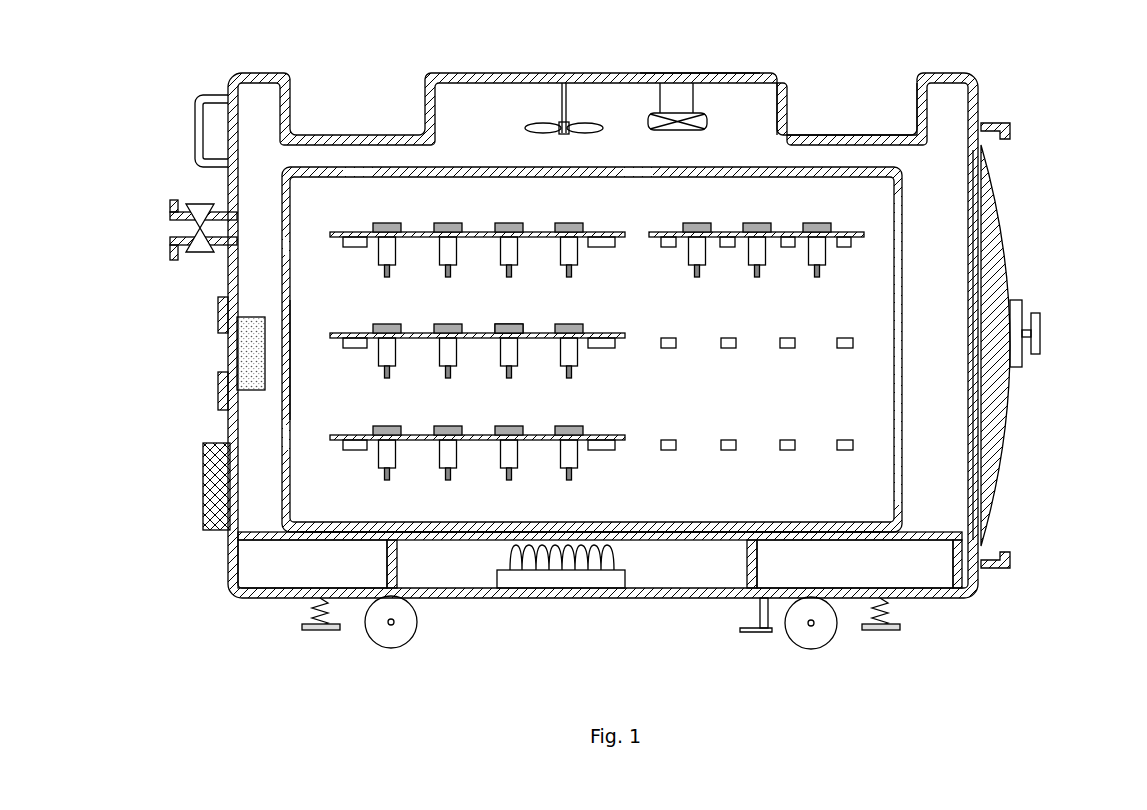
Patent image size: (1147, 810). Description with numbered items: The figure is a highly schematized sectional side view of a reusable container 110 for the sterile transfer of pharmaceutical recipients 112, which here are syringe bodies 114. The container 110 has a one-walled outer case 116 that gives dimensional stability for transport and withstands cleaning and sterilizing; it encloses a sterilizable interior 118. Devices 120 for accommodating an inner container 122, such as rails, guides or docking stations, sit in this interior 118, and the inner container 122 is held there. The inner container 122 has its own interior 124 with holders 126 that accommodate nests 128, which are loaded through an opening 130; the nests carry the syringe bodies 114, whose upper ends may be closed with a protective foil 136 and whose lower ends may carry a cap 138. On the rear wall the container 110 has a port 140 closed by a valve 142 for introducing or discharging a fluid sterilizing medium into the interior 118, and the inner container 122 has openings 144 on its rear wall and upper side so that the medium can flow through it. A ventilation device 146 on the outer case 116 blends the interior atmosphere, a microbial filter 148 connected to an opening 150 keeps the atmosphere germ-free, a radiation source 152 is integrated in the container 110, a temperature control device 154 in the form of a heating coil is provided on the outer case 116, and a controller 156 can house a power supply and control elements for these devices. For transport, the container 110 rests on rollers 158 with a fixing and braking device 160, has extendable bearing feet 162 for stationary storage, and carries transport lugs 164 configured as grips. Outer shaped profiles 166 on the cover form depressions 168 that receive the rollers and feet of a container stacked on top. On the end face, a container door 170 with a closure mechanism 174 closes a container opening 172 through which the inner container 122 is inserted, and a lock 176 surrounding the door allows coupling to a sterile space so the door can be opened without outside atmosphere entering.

The container 110 is at (603, 73).
The pharmaceutical recipients 112 is at (573, 360).
The syringe bodies 114 is at (741, 309).
The outer case 116 is at (692, 72).
The interior 118 is at (961, 447).
The devices for accommodating an inner container 120 is at (385, 560).
The inner container 122 is at (654, 523).
The interior of the inner container 124 is at (864, 397).
The holders 126 is at (350, 349).
The nests 128 is at (420, 340).
The opening 130 is at (898, 323).
The protective foil 136 is at (507, 325).
The cap 138 is at (511, 380).
The port 140 is at (172, 252).
The valve 142 is at (198, 205).
The openings 144 is at (350, 174).
The ventilation device 146 is at (527, 130).
The microbial filter 148 is at (250, 317).
The opening 150 is at (232, 346).
The radiation source 152 is at (700, 129).
The temperature control device 154 is at (617, 548).
The controller 156 is at (203, 482).
The rollers 158 is at (825, 640).
The fixing and braking device 160 is at (763, 640).
The bearing feet 162 is at (888, 634).
The transport lugs 164 is at (197, 122).
The outer shaped profiles 166 is at (799, 90).
The depressions 168 is at (890, 95).
The container door 170 is at (1008, 420).
The container opening 172 is at (976, 240).
The closure mechanism 174 is at (1042, 334).
The lock 176 is at (995, 123).